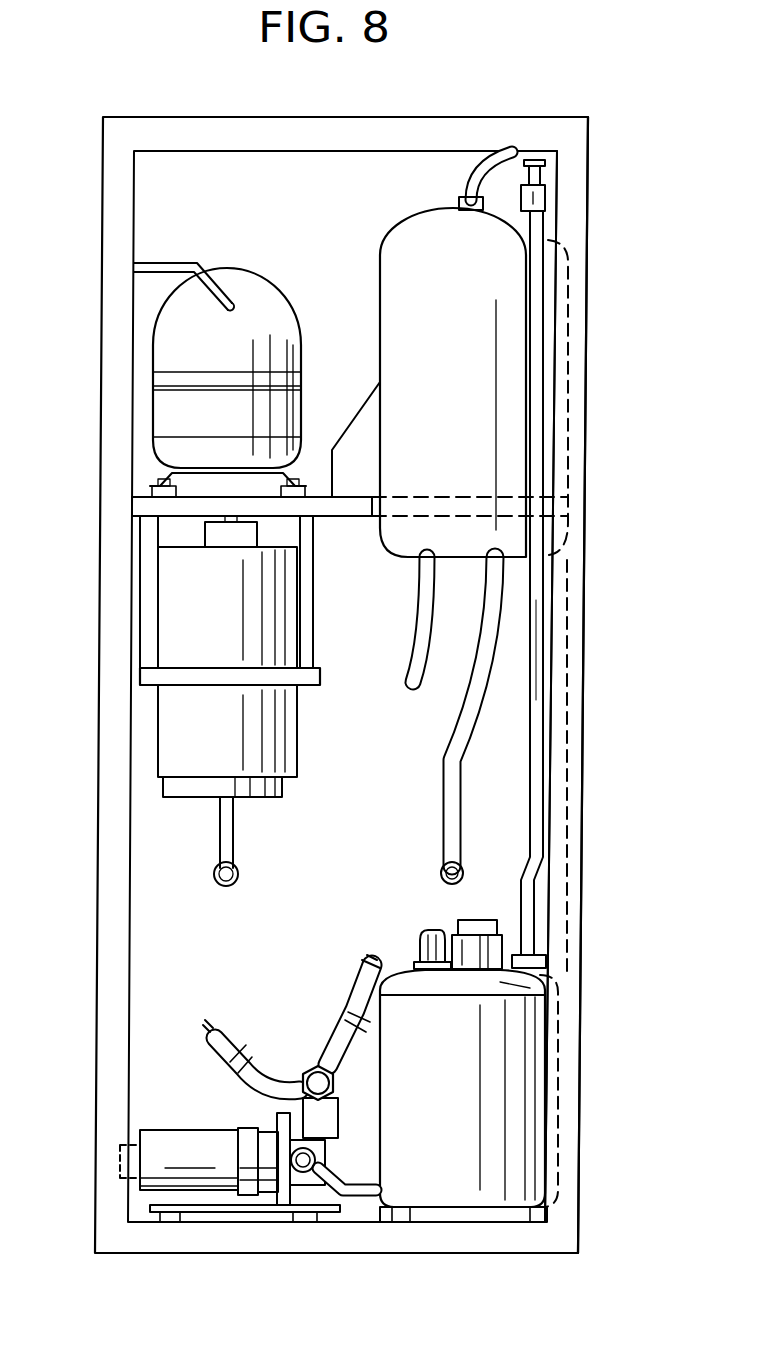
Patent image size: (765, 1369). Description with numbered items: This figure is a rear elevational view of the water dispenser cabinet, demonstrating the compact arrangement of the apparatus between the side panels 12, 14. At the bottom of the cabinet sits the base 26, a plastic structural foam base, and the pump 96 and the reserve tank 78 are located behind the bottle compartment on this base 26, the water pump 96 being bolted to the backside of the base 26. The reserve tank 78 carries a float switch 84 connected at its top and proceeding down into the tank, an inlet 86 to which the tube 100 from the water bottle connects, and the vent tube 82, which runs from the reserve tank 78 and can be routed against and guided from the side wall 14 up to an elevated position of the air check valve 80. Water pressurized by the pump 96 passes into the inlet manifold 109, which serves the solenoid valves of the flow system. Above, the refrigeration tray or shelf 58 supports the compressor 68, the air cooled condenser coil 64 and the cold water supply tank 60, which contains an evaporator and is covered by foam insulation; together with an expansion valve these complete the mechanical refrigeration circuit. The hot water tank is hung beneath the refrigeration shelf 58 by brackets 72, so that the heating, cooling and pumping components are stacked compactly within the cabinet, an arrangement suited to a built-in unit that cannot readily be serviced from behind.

The side panel 12 is at (100, 630).
The side panel 14 is at (584, 575).
The base 26 is at (448, 1225).
The refrigeration tray 58 is at (344, 508).
The cold water supply tank 60 is at (412, 245).
The air cooled condenser coil 64 is at (360, 405).
The compressor 68 is at (258, 283).
The brackets 72 is at (306, 609).
The reserve tank 78 is at (276, 724).
The air check valve 80 is at (546, 194).
The tube 82 is at (541, 405).
The float switch 84 is at (478, 930).
The inlet 86 is at (421, 960).
The water pump 96 is at (202, 1170).
The tube 100 is at (438, 925).
The inlet manifold 109 is at (302, 1075).